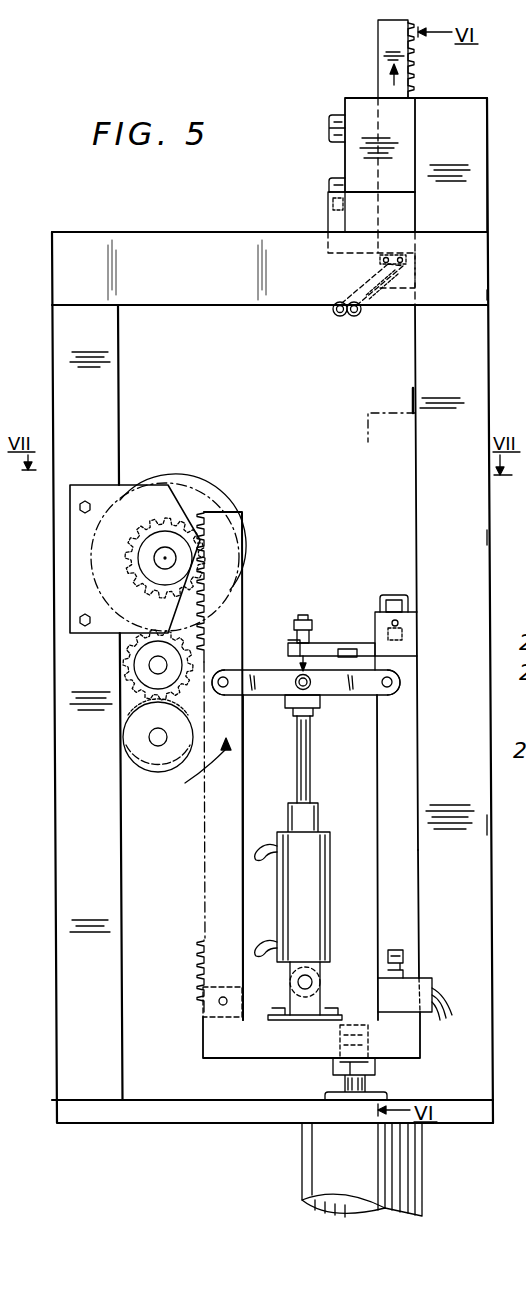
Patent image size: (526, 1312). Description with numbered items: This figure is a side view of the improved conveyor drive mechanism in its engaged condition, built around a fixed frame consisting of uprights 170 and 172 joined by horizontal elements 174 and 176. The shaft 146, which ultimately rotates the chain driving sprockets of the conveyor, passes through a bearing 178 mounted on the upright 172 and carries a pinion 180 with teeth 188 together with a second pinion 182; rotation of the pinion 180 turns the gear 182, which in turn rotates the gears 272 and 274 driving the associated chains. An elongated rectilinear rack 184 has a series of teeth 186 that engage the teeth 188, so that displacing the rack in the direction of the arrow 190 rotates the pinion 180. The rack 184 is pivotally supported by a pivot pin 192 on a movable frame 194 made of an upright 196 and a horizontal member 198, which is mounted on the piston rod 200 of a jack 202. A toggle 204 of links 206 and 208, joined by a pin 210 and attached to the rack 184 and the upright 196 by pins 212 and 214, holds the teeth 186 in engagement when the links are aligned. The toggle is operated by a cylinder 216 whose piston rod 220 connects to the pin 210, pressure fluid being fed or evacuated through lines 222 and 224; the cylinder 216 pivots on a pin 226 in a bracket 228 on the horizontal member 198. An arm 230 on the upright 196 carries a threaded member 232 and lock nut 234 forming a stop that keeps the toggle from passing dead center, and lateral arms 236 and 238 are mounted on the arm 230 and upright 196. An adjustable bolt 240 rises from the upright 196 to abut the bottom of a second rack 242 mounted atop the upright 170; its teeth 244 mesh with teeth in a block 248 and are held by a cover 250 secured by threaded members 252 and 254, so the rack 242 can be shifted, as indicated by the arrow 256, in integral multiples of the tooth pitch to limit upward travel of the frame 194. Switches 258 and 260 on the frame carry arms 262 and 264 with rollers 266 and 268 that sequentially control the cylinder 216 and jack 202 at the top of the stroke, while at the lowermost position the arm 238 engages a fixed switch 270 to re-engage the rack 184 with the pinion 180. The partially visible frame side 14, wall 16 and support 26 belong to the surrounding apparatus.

The machine frame 14 is at (506, 537).
The frame wall 16 is at (490, 826).
The support 26 is at (506, 292).
The shaft 146 is at (170, 558).
The upright 170 is at (487, 368).
The upright 172 is at (119, 415).
The horizontal element 174 is at (213, 306).
The horizontal element 176 is at (152, 1100).
The bearing 178 is at (128, 485).
The pinion 180 is at (168, 522).
The second pinion 182 is at (215, 505).
The rack 184 is at (243, 531).
The teeth 186 is at (206, 593).
The teeth 188 is at (154, 558).
The arrow 190 is at (191, 774).
The pivot pin 192 is at (219, 1000).
The frame 194 is at (422, 910).
The upright 196 is at (418, 750).
The horizontal member 198 is at (248, 1050).
The piston rod 200 is at (333, 1068).
The jack 202 is at (423, 1152).
The toggle 204 is at (334, 698).
The link 206 is at (266, 700).
The link 208 is at (368, 696).
The pin 210 is at (306, 668).
The pin 212 is at (224, 670).
The pin 214 is at (400, 690).
The cylinder 216 is at (320, 910).
The piston rod 220 is at (310, 762).
The line 222 is at (264, 845).
The line 224 is at (270, 952).
The pin 226 is at (312, 985).
The bracket 228 is at (310, 1003).
The arm 230 is at (327, 644).
The threaded member 232 is at (329, 673).
The lock nut 234 is at (296, 640).
The lateral extension 236 is at (400, 656).
The lateral extension 238 is at (405, 955).
The bolt 240 is at (390, 597).
The second rack 242 is at (378, 37).
The teeth 244 is at (414, 60).
The block 248 is at (470, 130).
The cover 250 is at (350, 98).
The threaded member 252 is at (330, 124).
The threaded member 254 is at (330, 184).
The arrow 256 is at (414, 80).
The switch 258 is at (286, 212).
The switch 260 is at (380, 218).
The arm 262 is at (425, 288).
The arm 264 is at (360, 280).
The roller 266 is at (356, 315).
The roller 268 is at (334, 313).
The fixed switch 270 is at (432, 986).
The gear 272 is at (120, 668).
The gear 274 is at (120, 744).